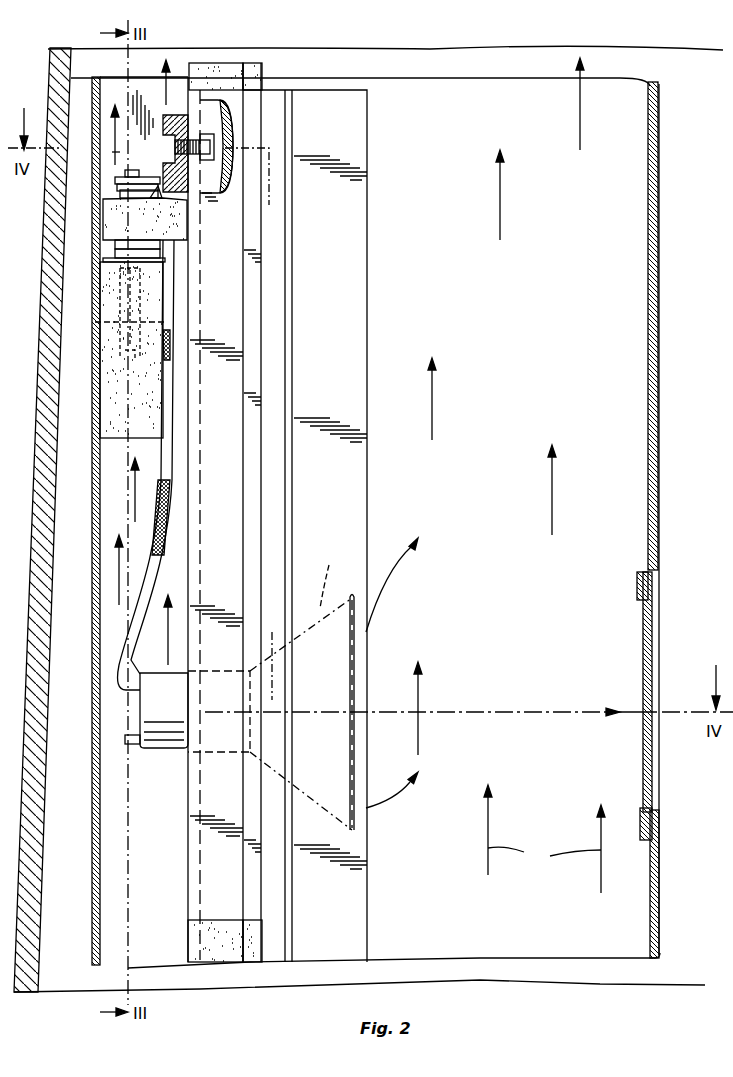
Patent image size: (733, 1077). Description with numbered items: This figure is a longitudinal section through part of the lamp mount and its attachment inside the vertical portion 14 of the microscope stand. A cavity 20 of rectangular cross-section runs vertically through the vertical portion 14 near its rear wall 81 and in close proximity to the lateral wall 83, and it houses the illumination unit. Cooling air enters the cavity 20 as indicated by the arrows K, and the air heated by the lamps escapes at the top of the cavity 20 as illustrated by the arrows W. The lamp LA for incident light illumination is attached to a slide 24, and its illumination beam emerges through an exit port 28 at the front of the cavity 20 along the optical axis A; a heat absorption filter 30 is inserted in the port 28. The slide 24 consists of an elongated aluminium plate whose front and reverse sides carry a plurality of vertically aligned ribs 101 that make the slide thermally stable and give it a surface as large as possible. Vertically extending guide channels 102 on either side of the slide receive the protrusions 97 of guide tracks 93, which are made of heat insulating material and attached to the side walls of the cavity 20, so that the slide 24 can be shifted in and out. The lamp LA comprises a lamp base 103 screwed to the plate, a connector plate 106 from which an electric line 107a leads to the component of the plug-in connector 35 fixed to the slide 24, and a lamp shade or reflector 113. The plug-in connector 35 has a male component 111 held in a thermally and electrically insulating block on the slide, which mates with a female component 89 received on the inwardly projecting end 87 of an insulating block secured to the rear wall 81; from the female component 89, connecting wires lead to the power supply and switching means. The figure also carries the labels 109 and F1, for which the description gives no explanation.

The vertical portion 14 is at (690, 151).
The cavity 20 is at (652, 300).
The slide 24 is at (378, 143).
The exit port 28 is at (655, 806).
The heat absorption filter 30 is at (645, 618).
The plug-in connector 35 is at (76, 221).
The rear wall 81 is at (40, 405).
The lateral wall 83 is at (578, 972).
The inwardly projecting end 87 is at (130, 432).
The female component 89 is at (145, 322).
The guide track 93 is at (214, 64).
The protrusion 97 is at (250, 70).
The rib 101 is at (335, 300).
The guide channel 102 is at (260, 105).
The lamp base 103 is at (231, 755).
The connector plate 106 is at (166, 748).
The electric line 107a is at (172, 476).
The clamping block 109 is at (190, 213).
The male component 111 is at (132, 284).
The lamp shade or reflector 113 is at (340, 752).
The lamp for incident light illumination LA is at (320, 573).
The optical axis of incident light illumination beam A is at (465, 706).
The cooling air arrows K is at (656, 540).
The force F1 is at (645, 636).
The heated air arrows W is at (358, 476).